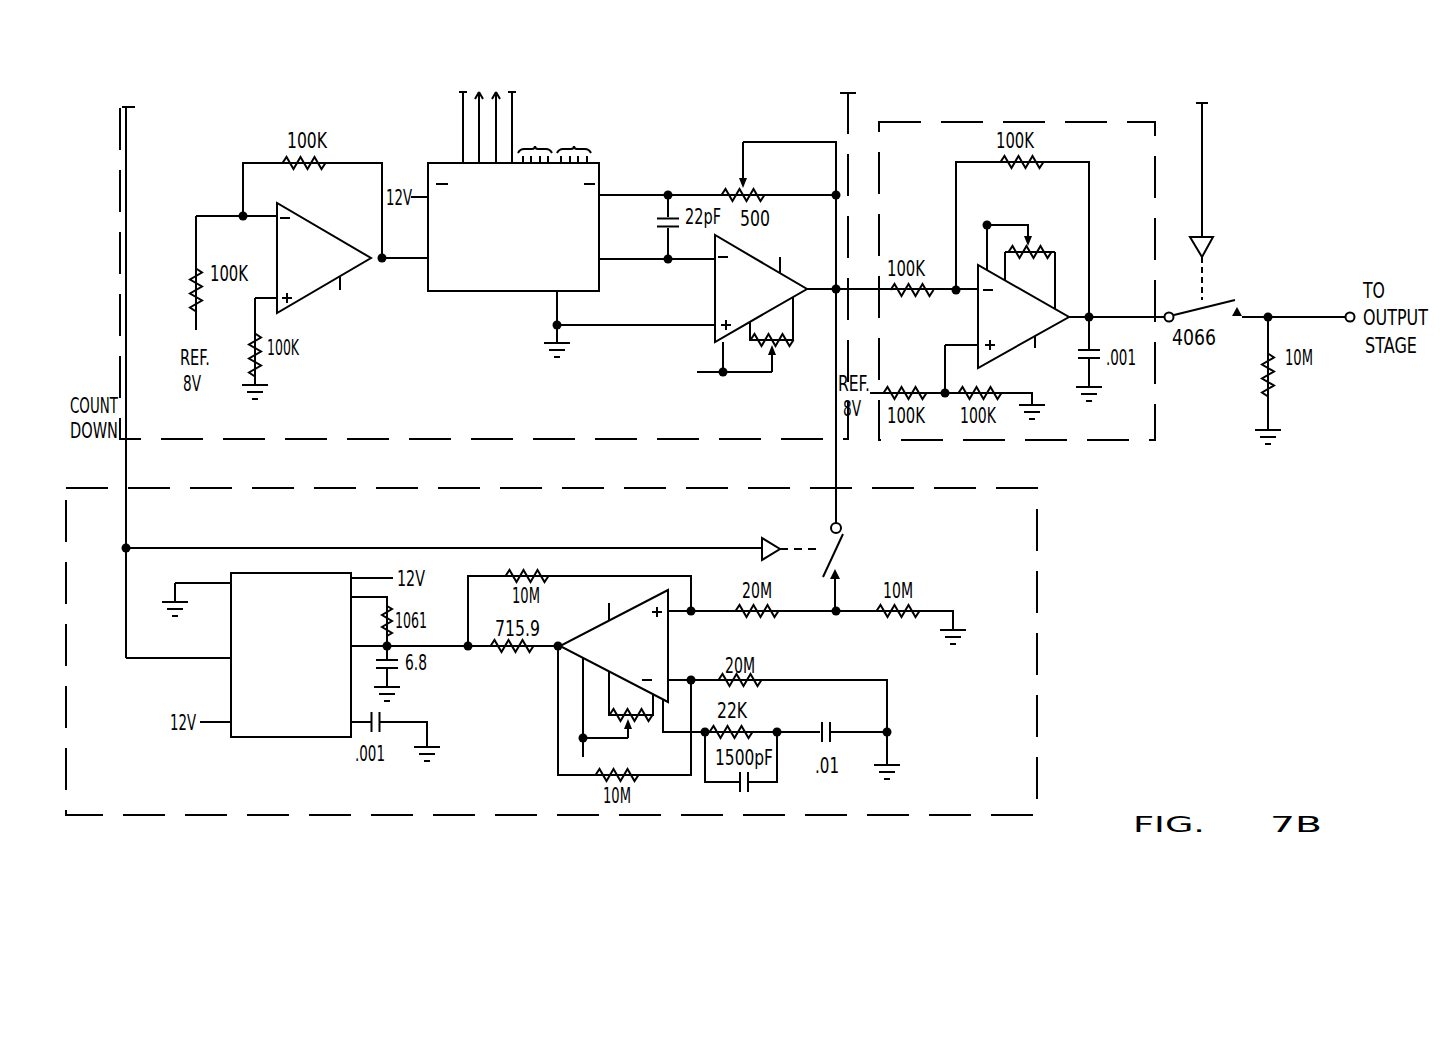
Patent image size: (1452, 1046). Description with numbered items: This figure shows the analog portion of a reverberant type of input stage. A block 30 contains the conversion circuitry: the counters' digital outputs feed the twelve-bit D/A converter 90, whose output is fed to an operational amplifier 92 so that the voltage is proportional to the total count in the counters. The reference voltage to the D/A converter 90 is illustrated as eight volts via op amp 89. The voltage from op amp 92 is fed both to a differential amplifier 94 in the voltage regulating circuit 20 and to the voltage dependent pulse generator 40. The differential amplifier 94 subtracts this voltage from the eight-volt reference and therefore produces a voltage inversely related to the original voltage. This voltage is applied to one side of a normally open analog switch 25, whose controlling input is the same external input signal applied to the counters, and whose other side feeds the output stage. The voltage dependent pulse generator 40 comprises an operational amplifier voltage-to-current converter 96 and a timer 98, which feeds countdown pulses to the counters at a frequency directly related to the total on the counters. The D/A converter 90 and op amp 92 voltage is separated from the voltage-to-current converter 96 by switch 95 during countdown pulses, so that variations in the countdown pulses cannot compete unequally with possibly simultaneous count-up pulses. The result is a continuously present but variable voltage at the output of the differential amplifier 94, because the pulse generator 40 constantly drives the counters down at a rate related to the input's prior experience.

The op amp 89 is at (313, 222).
The digital-to-analog (D/A) converter 90 is at (517, 291).
The operational amplifier 92 is at (715, 291).
The differential amplifier 94 is at (978, 318).
The switch 95 is at (843, 530).
The operational amplifier voltage-to-current converter 96 is at (668, 633).
The 555 timer 98 is at (231, 628).
The analog switch 25 is at (1205, 276).
The digital-to-analog conversion circuit 30 is at (584, 440).
The voltage regulating circuit 20 is at (1155, 432).
The voltage dependent pulse generator 40 is at (1037, 692).